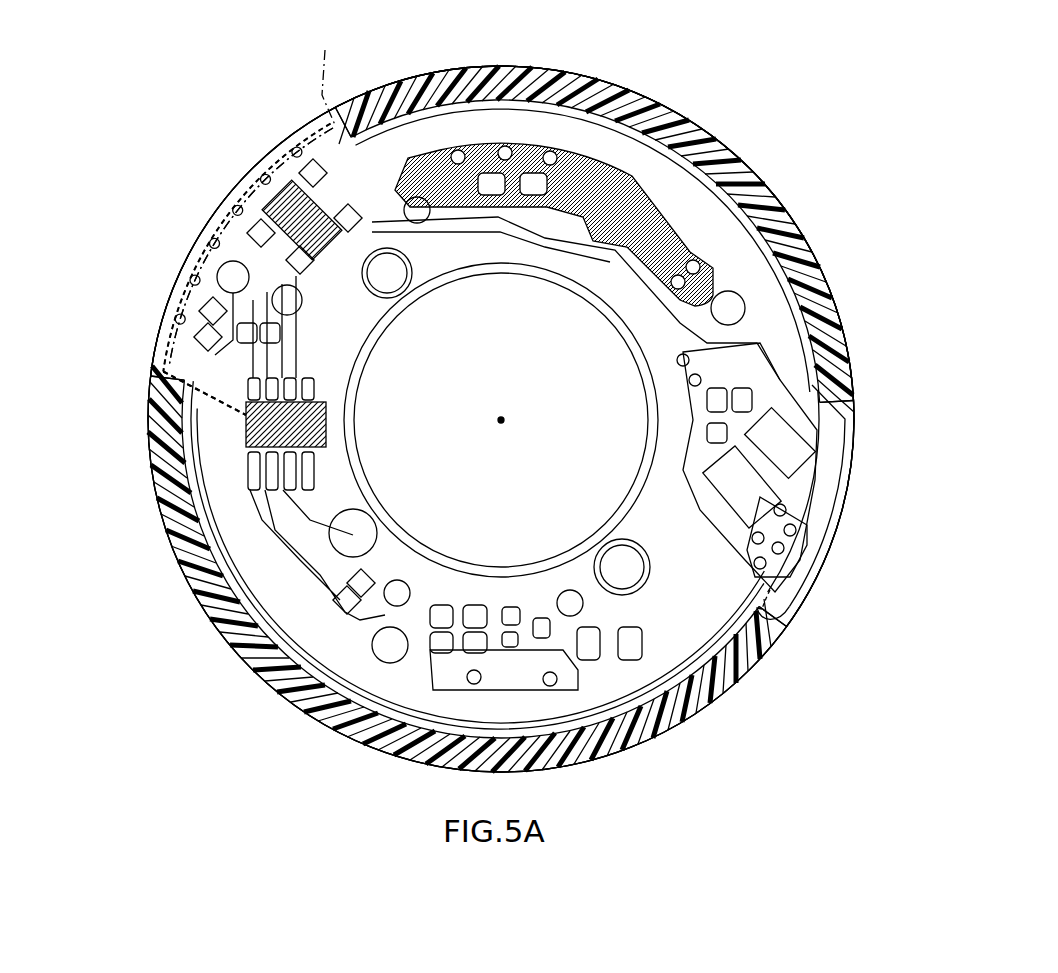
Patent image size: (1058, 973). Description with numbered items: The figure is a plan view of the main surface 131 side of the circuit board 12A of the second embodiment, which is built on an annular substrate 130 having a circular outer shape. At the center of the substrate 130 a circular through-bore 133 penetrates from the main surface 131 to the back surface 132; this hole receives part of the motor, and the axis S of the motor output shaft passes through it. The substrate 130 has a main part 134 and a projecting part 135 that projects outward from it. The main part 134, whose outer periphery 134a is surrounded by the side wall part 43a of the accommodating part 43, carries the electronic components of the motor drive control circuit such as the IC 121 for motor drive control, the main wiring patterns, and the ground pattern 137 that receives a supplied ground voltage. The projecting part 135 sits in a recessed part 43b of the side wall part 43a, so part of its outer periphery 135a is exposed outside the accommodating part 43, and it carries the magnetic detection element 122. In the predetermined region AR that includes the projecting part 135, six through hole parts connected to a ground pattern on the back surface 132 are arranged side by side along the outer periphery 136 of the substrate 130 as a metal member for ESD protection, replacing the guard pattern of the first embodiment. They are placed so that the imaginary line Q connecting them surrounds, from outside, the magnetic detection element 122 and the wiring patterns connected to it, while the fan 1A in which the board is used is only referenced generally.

The imaging apparatus 1A is at (825, 124).
The circuit board 12A is at (744, 214).
The substrate 130 is at (750, 211).
The main surface 131 is at (800, 348).
The back surface 132 is at (800, 607).
The through-bore 133 is at (565, 535).
The main part 134 is at (543, 125).
The outer periphery of the main part 134a is at (620, 122).
The projecting part 135 is at (157, 351).
The outer periphery of the projecting part 135a is at (160, 345).
The outer periphery of the substrate 136 is at (160, 345).
The ground pattern 137 is at (612, 200).
The accommodating part 43 is at (666, 99).
The side wall part 43a is at (642, 94).
The recessed part 43b is at (345, 100).
The IC for motor drive control 121 is at (246, 448).
The magnetic detection element 122 is at (292, 175).
The imaginary line Q is at (249, 197).
The predetermined region AR is at (150, 425).
The axis S is at (505, 420).